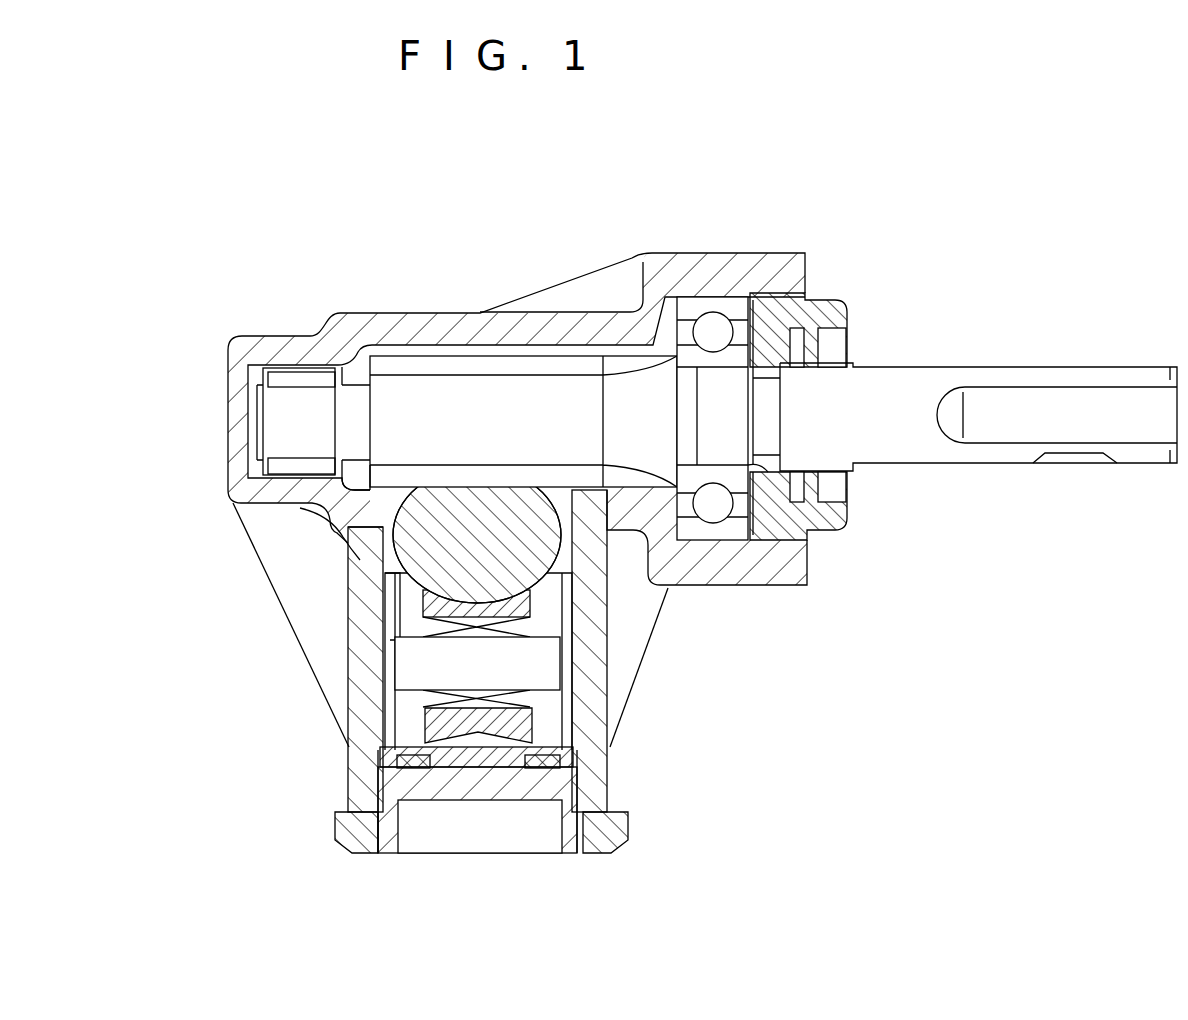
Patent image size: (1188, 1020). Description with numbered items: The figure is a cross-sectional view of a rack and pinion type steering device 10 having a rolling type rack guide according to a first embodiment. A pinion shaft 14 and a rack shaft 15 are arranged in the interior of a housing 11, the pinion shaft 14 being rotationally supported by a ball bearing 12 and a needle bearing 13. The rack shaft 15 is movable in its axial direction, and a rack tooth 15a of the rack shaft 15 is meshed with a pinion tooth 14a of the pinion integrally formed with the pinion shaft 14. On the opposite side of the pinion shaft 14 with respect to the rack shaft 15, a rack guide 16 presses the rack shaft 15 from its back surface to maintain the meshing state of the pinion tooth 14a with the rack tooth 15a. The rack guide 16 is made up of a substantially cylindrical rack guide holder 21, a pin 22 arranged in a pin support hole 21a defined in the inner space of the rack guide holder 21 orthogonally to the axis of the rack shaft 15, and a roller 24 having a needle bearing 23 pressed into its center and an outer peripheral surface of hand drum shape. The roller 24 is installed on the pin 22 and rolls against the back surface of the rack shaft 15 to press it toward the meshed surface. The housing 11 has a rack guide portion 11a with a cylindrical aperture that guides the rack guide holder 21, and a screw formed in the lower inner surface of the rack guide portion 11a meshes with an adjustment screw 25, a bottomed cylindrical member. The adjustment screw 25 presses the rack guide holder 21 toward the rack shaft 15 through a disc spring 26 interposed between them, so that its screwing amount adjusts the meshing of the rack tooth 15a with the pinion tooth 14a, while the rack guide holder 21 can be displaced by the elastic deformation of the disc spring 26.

The rack and pinion type steering device 10 is at (660, 542).
The housing 11 is at (662, 276).
The rack guide portion 11a is at (380, 590).
The ball bearing 12 is at (709, 326).
The needle bearing 13 is at (298, 378).
The pinion shaft 14 is at (922, 378).
The pinion tooth 14a is at (415, 365).
The rack shaft 15 is at (350, 560).
The rack tooth 15a is at (343, 500).
The rack guide 16 is at (378, 733).
The rack guide holder 21 is at (372, 700).
The pin support hole 21a is at (392, 632).
The pin 22 is at (570, 673).
The needle bearing 23 is at (580, 747).
The roller 24 is at (575, 752).
The adjustment screw 25 is at (535, 790).
The disc spring 26 is at (577, 793).